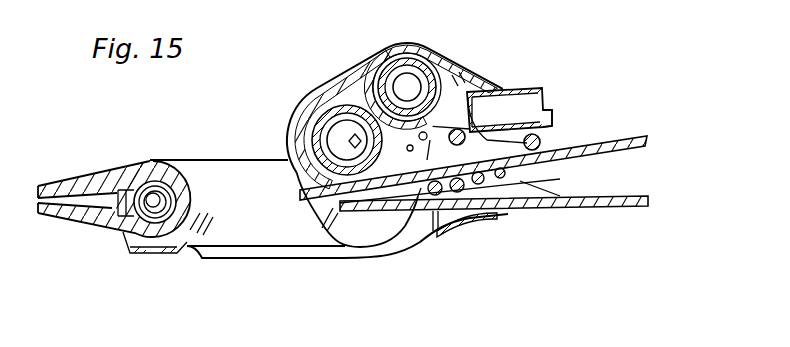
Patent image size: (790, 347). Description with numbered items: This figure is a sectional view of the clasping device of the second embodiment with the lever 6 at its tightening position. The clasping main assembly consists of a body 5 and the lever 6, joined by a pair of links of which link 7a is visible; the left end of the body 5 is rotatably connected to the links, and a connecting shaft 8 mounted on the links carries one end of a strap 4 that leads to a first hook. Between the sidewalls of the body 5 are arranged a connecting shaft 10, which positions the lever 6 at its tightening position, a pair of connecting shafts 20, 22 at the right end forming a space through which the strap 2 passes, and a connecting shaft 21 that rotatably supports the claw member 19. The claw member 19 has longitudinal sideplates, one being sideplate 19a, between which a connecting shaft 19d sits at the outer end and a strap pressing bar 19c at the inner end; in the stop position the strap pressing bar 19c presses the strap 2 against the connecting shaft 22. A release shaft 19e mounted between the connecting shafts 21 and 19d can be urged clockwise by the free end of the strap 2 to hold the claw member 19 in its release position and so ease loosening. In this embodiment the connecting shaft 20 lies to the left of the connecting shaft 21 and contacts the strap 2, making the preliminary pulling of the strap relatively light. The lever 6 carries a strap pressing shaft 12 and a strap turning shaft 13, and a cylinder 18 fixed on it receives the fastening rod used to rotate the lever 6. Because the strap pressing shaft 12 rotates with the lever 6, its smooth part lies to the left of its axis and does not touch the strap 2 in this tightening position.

The strap 2 is at (640, 210).
The strap 4 is at (98, 173).
The body 5 is at (330, 262).
The lever 6 is at (440, 54).
The link 7a is at (238, 172).
The connecting shaft 8 is at (155, 208).
The connecting shaft 10 is at (456, 126).
The strap pressing shaft 12 is at (327, 123).
The strap turning shaft 13 is at (400, 72).
The cylinder 18 is at (540, 89).
The claw member 19 is at (555, 136).
The sideplate 19a is at (482, 166).
The strap pressing bar 19c is at (458, 193).
The connecting shaft 19d is at (545, 125).
The release shaft 19e is at (560, 196).
The connecting shaft 20 is at (420, 194).
The connecting shaft 21 is at (502, 186).
The connecting shaft 22 is at (465, 220).